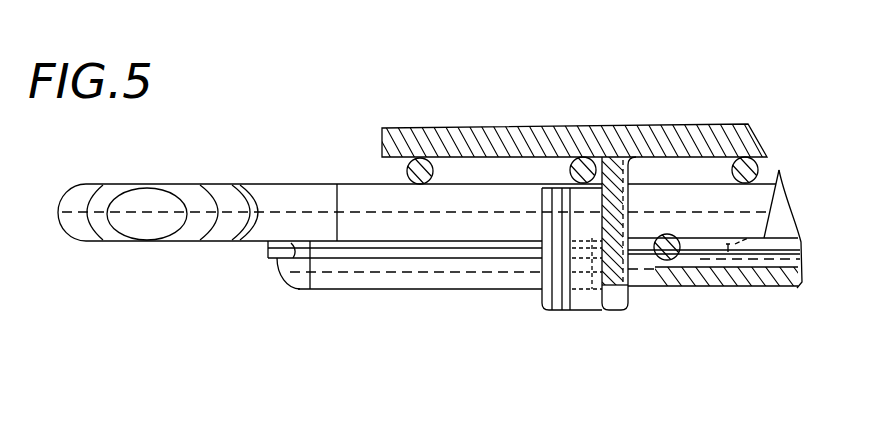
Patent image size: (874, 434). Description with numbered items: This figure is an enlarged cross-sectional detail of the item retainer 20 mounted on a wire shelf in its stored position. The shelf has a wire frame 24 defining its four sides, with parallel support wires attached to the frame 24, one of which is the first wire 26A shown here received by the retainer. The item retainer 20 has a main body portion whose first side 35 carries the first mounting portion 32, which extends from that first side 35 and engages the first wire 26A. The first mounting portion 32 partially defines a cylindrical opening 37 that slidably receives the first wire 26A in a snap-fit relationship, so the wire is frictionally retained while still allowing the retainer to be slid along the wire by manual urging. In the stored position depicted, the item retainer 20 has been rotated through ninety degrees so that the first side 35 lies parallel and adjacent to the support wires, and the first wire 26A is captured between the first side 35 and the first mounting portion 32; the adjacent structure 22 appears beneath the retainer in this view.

The item retainer 20 is at (723, 112).
The lower body 22 is at (421, 302).
The wire frame 24 is at (125, 242).
The first wire 26A is at (578, 127).
The first mounting portion 32 is at (536, 318).
The first side 35 is at (398, 143).
The cylindrical openings 37 is at (580, 290).